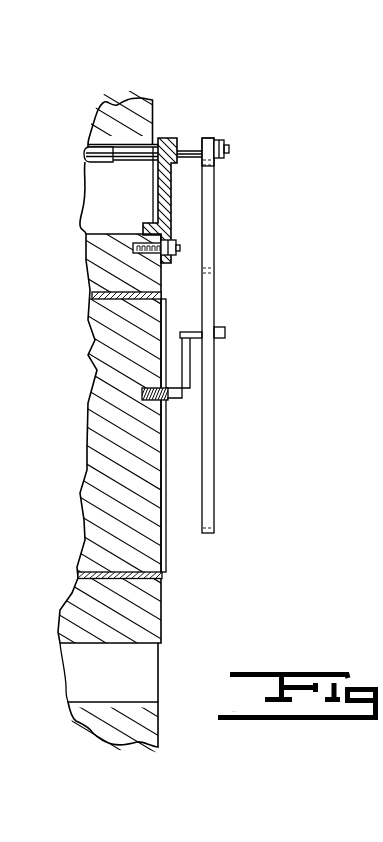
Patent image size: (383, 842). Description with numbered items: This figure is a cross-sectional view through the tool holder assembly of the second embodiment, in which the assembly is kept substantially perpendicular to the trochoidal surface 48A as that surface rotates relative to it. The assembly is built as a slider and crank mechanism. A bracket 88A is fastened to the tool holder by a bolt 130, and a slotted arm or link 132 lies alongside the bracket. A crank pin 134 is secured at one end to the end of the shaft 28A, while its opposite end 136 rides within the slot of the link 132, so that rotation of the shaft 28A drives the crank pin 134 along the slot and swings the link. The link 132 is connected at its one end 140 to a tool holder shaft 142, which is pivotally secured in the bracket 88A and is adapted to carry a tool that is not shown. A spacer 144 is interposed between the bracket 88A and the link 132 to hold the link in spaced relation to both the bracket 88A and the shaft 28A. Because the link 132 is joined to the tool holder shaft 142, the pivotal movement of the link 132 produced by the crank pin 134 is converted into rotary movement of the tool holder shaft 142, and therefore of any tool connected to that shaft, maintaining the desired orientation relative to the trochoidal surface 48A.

The shaft 28A is at (158, 558).
The trochoidal surface 48A is at (84, 157).
The bracket 88A is at (170, 210).
The bolt 130 is at (190, 255).
The slotted arm or link 132 is at (215, 235).
The crank pin 134 is at (190, 391).
The opposite end of crank pin 136 is at (225, 338).
The end of link 140 is at (200, 140).
The tool holder shaft 142 is at (226, 152).
The spacer 144 is at (190, 133).